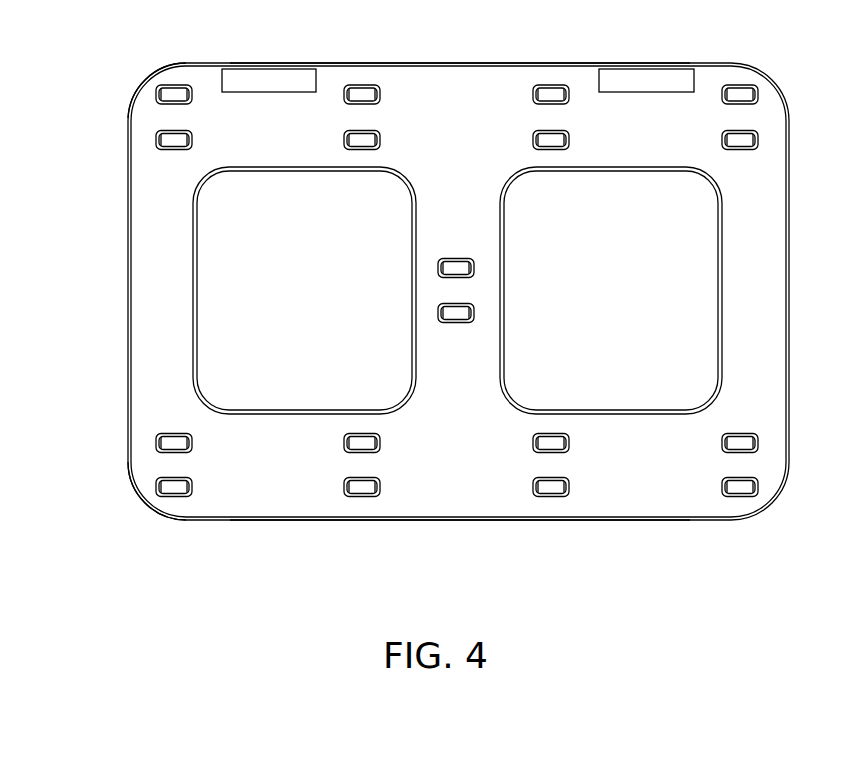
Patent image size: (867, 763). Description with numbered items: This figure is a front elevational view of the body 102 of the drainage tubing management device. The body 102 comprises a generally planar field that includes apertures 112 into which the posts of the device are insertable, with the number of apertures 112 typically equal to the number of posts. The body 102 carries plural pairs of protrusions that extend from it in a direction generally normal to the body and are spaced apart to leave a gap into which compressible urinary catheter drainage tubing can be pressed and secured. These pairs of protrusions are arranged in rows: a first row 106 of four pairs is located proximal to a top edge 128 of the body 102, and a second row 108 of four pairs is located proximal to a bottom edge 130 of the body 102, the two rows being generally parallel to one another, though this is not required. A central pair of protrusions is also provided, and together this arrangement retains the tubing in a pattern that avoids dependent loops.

The body 102 is at (143, 281).
The first row 106 is at (112, 110).
The second row 108 is at (112, 457).
The apertures 112 is at (275, 80).
The top edge 128 is at (457, 63).
The bottom edge 130 is at (458, 521).